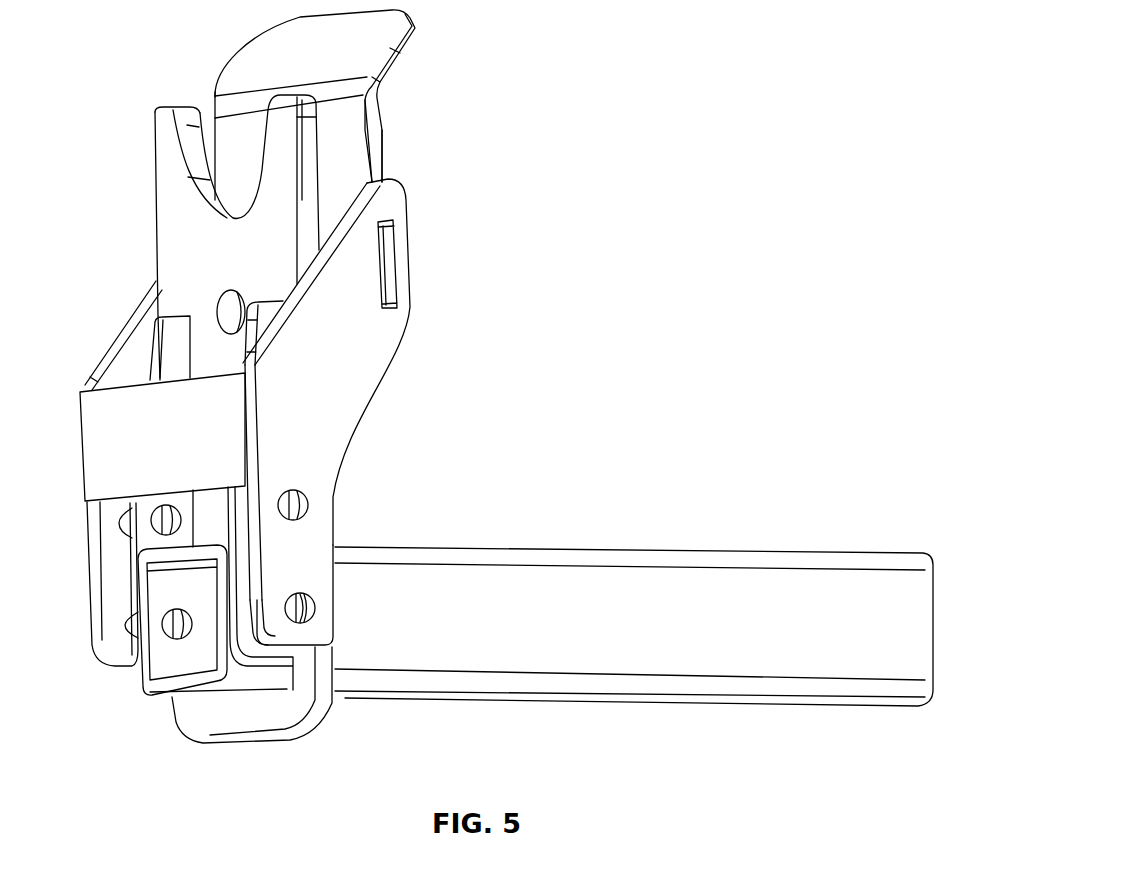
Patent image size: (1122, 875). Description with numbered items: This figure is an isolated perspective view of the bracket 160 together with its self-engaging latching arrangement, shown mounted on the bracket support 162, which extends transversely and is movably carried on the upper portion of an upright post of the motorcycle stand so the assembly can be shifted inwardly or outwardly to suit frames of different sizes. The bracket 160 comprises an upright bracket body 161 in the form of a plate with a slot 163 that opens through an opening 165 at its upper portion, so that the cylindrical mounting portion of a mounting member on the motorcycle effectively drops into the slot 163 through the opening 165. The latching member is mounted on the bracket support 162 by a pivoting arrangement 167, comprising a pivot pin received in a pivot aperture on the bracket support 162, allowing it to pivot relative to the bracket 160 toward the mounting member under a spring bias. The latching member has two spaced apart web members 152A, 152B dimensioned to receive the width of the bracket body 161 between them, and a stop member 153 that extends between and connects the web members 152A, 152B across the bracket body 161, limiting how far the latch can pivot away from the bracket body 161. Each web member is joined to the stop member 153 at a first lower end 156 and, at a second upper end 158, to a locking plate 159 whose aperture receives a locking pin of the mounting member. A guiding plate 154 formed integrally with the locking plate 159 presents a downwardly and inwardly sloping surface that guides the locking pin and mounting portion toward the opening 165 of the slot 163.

The web member 152A is at (120, 357).
The web member 152B is at (372, 352).
The stop member 153 is at (105, 440).
The guiding plate 154 is at (372, 53).
The first lower end 156 is at (331, 433).
The second upper end 158 is at (403, 245).
The locking plate 159 is at (358, 165).
The bracket 160 is at (170, 238).
The bracket body 161 is at (172, 292).
The bracket support 162 is at (520, 578).
The slot 163 is at (172, 172).
The opening 165 is at (186, 106).
The pivoting arrangement 167 is at (318, 600).